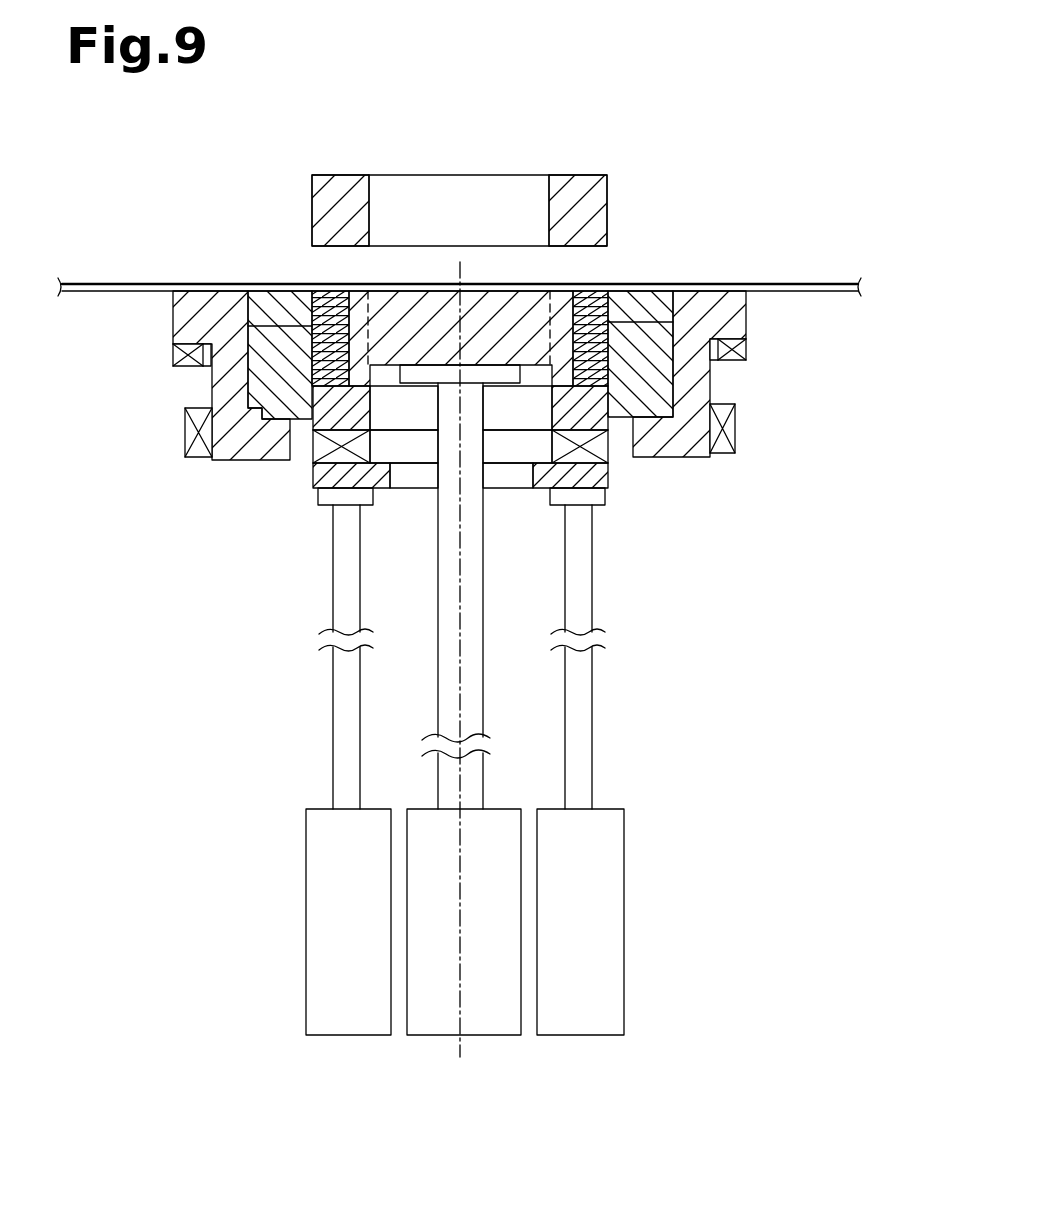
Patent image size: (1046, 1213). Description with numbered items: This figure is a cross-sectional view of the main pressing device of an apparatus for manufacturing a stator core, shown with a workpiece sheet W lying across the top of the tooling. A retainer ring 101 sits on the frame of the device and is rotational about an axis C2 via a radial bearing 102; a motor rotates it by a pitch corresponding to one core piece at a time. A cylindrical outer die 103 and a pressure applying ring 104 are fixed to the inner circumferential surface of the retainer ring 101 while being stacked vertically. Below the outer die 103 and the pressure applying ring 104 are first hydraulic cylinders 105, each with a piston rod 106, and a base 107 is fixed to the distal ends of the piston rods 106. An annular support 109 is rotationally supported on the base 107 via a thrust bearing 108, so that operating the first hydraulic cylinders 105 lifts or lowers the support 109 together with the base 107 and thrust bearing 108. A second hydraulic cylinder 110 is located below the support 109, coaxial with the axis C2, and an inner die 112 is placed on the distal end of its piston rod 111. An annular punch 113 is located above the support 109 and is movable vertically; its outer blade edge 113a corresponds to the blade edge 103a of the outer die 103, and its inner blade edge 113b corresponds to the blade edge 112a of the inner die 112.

The wafer W is at (110, 283).
The axis C2 is at (460, 540).
The retainer ring 101 is at (207, 298).
The radial bearing 102 is at (179, 353).
The cylindrical outer die 103 is at (651, 298).
The blade edge of the outer die 103a is at (320, 291).
The pressure applying ring 104 is at (257, 378).
The first hydraulic cylinders 105 is at (320, 893).
The piston rod 106 is at (336, 731).
The base 107 is at (604, 477).
The thrust bearing 108 is at (360, 448).
The annular support 109 is at (362, 408).
The second hydraulic cylinder 110 is at (494, 1021).
The piston rod 111 is at (475, 681).
The inner die 112 is at (406, 298).
The blade edge of the inner die 112a is at (573, 291).
The annular punch 113 is at (584, 188).
The outer blade edge 113a is at (609, 246).
The inner blade edge 113b is at (548, 246).